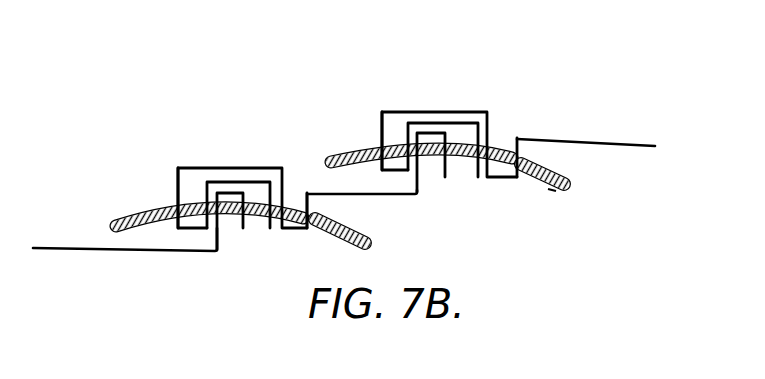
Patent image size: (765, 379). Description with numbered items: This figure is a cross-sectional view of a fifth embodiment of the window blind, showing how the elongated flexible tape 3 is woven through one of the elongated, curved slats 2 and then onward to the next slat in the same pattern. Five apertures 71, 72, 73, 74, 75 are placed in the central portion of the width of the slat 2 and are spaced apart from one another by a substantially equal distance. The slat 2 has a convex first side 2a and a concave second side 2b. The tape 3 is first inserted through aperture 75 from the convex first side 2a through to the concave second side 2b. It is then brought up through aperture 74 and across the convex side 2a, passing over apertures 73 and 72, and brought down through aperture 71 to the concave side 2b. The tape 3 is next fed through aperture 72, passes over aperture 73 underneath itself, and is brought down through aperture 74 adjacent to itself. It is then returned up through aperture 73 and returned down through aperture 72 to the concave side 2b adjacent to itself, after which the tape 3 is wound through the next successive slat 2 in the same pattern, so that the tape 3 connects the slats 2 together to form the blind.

The slat 2 is at (342, 148).
The convex first side 2a is at (557, 176).
The concave second side 2b is at (551, 190).
The tape 3 is at (627, 140).
The aperture 71 is at (375, 138).
The aperture 72 is at (405, 120).
The aperture 73 is at (450, 137).
The aperture 74 is at (485, 138).
The aperture 75 is at (513, 142).